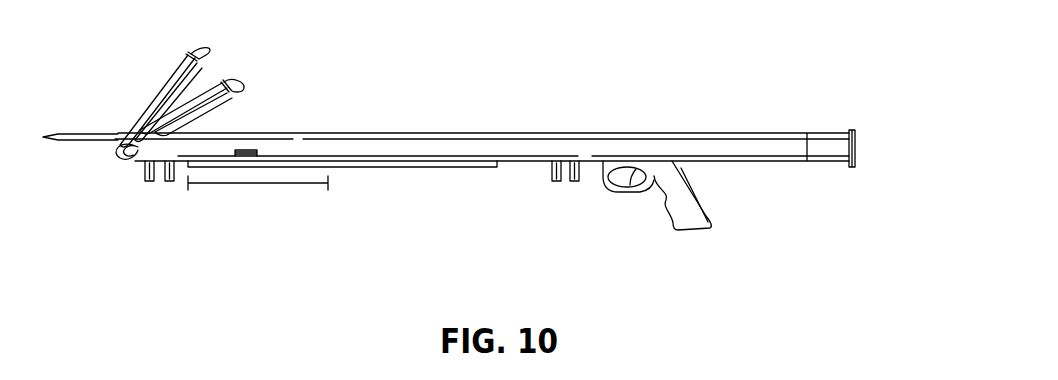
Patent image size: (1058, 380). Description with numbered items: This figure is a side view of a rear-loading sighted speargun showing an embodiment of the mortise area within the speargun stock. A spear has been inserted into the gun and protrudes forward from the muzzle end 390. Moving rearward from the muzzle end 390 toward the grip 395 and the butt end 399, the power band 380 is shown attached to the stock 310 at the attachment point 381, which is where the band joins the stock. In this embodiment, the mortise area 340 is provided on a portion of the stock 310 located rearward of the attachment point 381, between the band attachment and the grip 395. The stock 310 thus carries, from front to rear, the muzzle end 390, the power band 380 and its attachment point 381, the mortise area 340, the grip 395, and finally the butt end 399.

The stock 310 is at (542, 150).
The mortise area 340 is at (276, 184).
The power band 380 is at (218, 84).
The attachment point 381 is at (130, 160).
The muzzle end 390 is at (116, 134).
The grip 395 is at (698, 219).
The butt end 399 is at (856, 150).